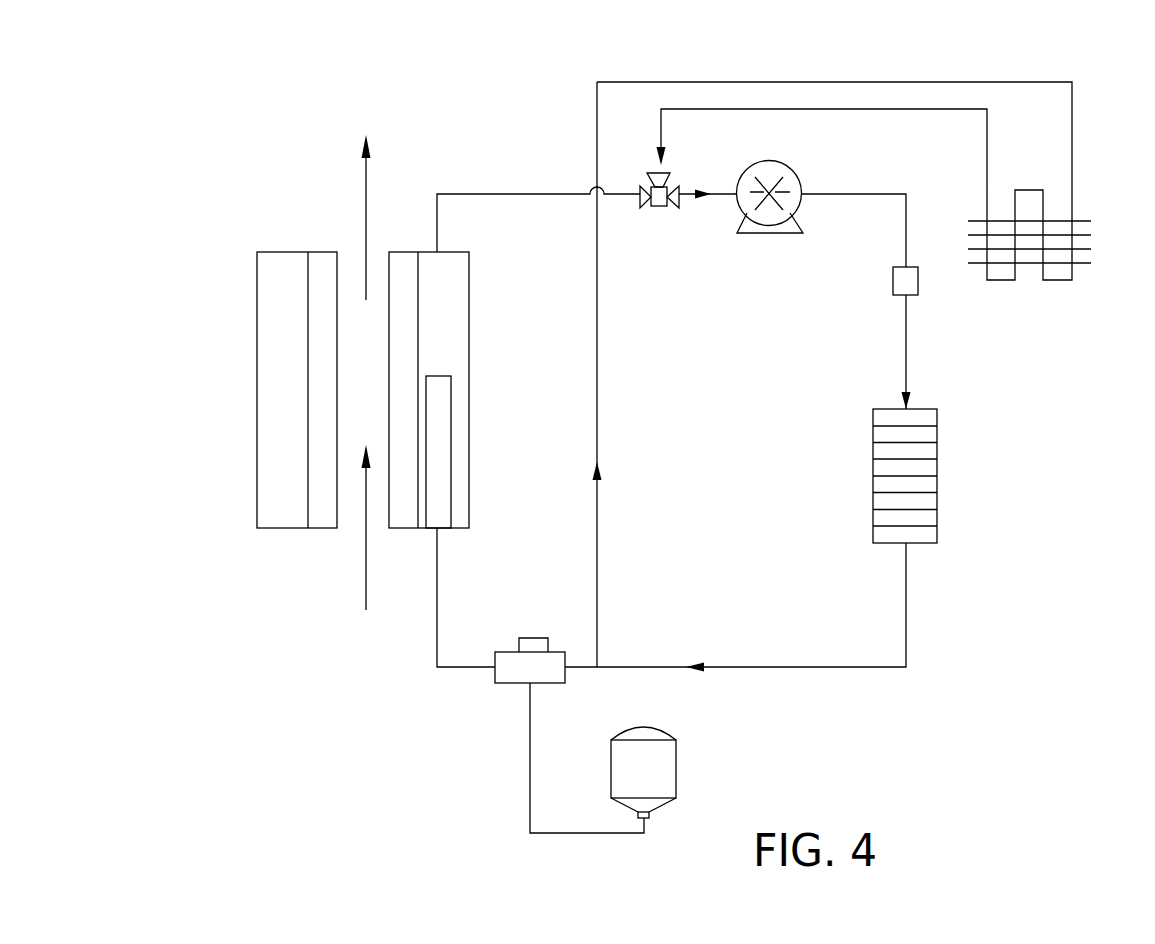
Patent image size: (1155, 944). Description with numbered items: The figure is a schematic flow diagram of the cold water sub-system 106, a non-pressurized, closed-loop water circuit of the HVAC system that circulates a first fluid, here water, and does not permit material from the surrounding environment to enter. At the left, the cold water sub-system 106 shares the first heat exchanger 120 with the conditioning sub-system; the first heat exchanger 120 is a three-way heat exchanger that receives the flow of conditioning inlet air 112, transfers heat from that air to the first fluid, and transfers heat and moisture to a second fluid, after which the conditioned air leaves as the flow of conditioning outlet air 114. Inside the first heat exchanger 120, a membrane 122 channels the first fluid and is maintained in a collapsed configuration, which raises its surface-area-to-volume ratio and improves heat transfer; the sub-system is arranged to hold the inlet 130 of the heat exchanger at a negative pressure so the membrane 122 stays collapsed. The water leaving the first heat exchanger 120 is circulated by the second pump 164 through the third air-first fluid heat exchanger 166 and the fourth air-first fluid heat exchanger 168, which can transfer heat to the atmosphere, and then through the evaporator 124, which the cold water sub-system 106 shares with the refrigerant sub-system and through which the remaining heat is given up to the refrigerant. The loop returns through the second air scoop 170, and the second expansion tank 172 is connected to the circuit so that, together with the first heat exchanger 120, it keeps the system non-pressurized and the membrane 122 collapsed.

The cold water sub-system 106 is at (290, 700).
The conditioning inlet air 112 is at (366, 565).
The conditioning outlet air 114 is at (366, 207).
The first heat exchanger 120 is at (257, 380).
The membrane 122 is at (452, 483).
The inlet 130 is at (437, 530).
The second pump 164 is at (748, 161).
The third air-first fluid heat exchanger 166 is at (1058, 222).
The fourth air-first fluid heat exchanger 168 is at (893, 280).
The evaporator 124 is at (920, 545).
The second air scoop 170 is at (510, 685).
The second expansion tank 172 is at (633, 727).